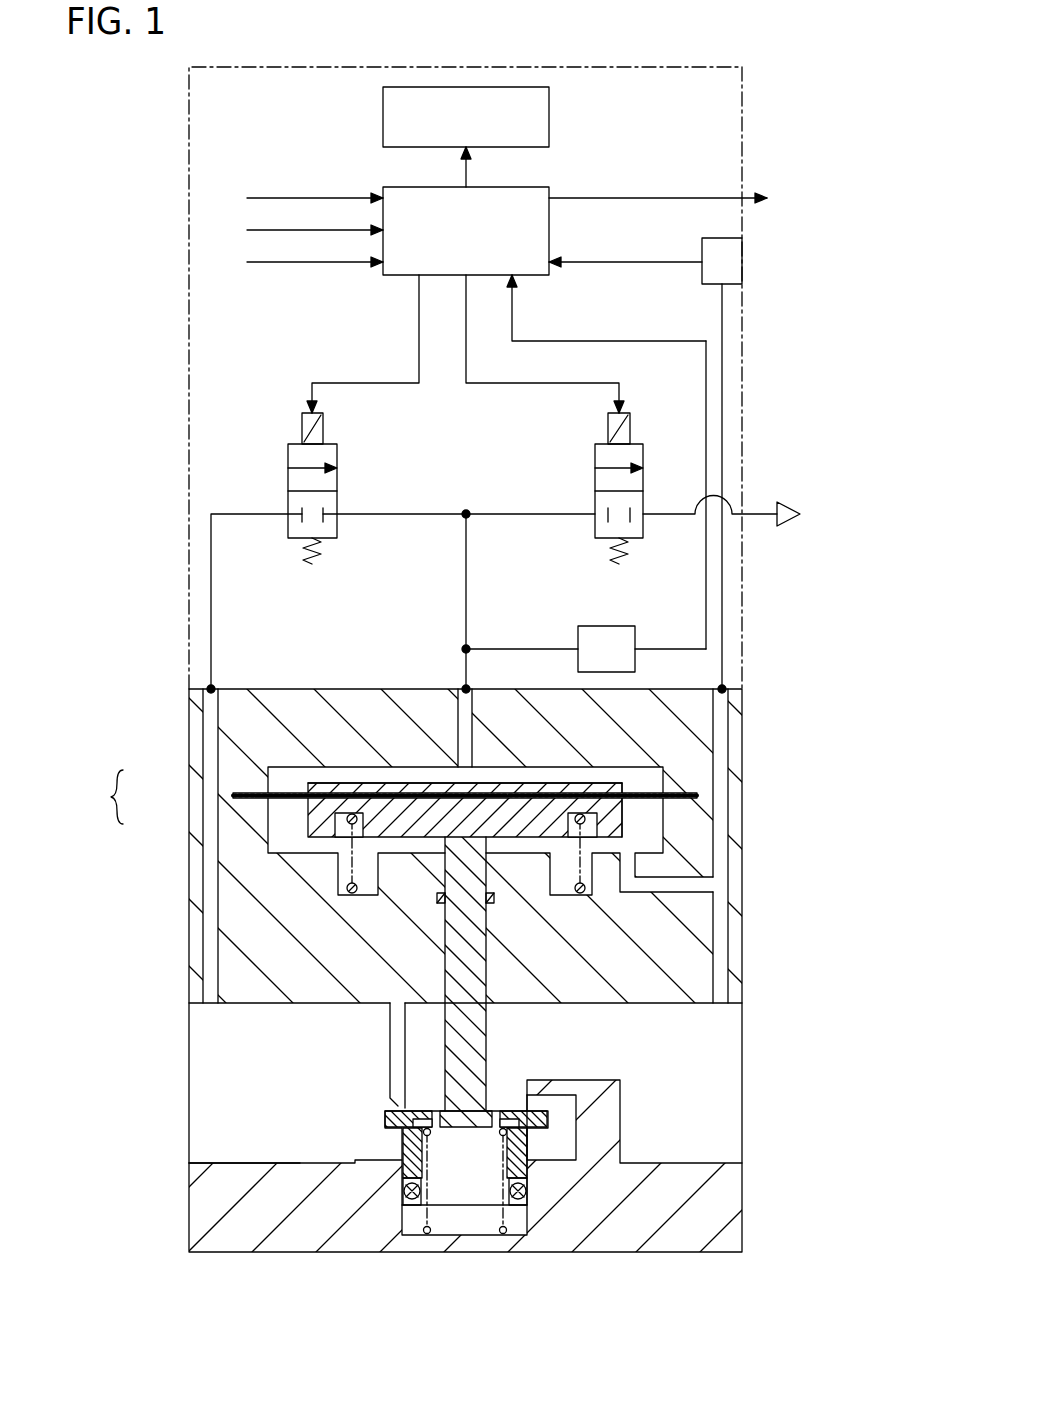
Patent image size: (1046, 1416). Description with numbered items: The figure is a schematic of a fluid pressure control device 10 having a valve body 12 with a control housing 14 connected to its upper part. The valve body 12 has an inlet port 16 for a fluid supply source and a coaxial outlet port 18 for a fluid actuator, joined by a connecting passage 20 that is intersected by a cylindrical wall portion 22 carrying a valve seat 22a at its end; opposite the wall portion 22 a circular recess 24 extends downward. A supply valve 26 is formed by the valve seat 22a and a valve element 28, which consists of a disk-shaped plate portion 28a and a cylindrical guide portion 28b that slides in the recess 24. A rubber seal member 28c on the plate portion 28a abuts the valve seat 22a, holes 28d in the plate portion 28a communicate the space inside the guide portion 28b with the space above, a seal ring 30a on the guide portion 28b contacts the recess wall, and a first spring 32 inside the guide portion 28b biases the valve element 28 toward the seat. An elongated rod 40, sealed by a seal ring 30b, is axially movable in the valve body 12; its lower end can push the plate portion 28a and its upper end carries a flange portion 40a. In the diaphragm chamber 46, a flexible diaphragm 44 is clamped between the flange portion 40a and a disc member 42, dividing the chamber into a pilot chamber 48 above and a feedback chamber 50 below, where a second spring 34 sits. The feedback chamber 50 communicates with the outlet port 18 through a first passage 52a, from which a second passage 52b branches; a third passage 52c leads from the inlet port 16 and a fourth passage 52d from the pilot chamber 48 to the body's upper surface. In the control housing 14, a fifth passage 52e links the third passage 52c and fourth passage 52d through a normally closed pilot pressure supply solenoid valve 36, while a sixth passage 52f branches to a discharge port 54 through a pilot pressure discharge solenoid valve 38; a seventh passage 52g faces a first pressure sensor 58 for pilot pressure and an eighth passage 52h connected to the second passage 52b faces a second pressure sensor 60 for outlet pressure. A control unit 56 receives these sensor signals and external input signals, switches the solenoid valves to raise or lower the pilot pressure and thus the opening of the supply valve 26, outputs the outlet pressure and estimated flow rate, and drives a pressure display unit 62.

The fluid pressure control device 10 is at (423, 37).
The valve body 12 is at (730, 1209).
The control housing 14 is at (612, 67).
The inlet port 16 is at (205, 1077).
The outlet port 18 is at (730, 1077).
The connecting passage 20 is at (300, 1133).
The wall portion 22 is at (398, 1032).
The valve seat 22a is at (527, 1105).
The recess 24 is at (468, 1225).
The supply valve 26 is at (368, 1112).
The valve element 28 is at (552, 1122).
The plate portion 28a is at (473, 1124).
The guide portion 28b is at (520, 1156).
The seal member 28c is at (550, 1108).
The holes 28d is at (437, 1108).
The seal ring 30a is at (522, 1195).
The seal ring 30b is at (438, 903).
The first spring 32 is at (503, 1234).
The second spring 34 is at (345, 897).
The pilot pressure supply solenoid valve 36 is at (302, 441).
The pilot pressure discharge solenoid valve 38 is at (630, 441).
The rod 40 is at (470, 928).
The flange portion 40a is at (533, 787).
The disc member 42 is at (407, 828).
The diaphragm 44 is at (647, 802).
The diaphragm chamber 46 is at (105, 797).
The pilot chamber 48 is at (272, 780).
The feedback chamber 50 is at (288, 823).
The first passage 52a is at (719, 935).
The second passage 52b is at (719, 731).
The third passage 52c is at (208, 935).
The fourth passage 52d is at (460, 712).
The fifth passage 52e is at (466, 563).
The sixth passage 52f is at (548, 514).
The seventh passage 52g is at (506, 649).
The eighth passage 52h is at (722, 303).
The discharge port 54 is at (792, 504).
The control unit 56 is at (527, 187).
The first pressure sensor 58 is at (598, 626).
The second pressure sensor 60 is at (702, 244).
The pressure display unit 62 is at (551, 113).